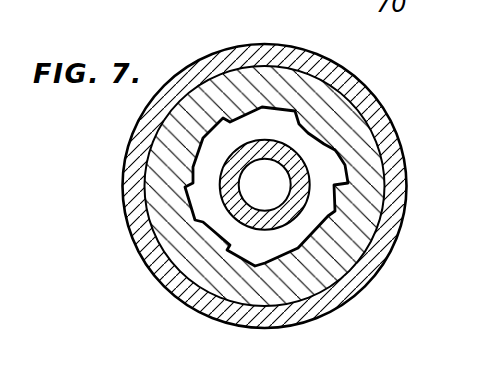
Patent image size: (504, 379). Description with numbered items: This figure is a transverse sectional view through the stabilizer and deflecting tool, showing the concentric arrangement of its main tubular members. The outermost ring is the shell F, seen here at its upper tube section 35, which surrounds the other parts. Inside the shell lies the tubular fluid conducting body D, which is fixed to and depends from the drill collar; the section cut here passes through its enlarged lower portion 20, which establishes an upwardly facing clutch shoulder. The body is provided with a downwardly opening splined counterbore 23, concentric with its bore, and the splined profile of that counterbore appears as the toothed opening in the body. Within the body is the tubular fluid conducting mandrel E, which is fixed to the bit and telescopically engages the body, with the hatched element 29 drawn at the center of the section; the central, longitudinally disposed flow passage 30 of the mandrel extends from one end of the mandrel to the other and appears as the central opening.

The enlarged lower portion 20 is at (365, 167).
The splined counterbore 23 is at (314, 144).
The hub 29 is at (269, 146).
The flow passage 30 is at (253, 199).
The upper tube section 35 is at (145, 233).
The shell F is at (140, 122).
The body D is at (155, 158).
The mandrel E is at (216, 189).